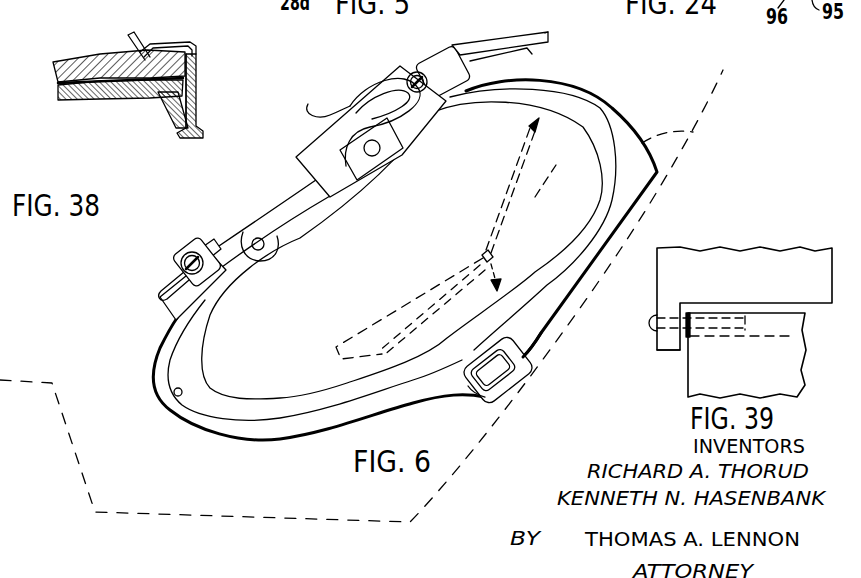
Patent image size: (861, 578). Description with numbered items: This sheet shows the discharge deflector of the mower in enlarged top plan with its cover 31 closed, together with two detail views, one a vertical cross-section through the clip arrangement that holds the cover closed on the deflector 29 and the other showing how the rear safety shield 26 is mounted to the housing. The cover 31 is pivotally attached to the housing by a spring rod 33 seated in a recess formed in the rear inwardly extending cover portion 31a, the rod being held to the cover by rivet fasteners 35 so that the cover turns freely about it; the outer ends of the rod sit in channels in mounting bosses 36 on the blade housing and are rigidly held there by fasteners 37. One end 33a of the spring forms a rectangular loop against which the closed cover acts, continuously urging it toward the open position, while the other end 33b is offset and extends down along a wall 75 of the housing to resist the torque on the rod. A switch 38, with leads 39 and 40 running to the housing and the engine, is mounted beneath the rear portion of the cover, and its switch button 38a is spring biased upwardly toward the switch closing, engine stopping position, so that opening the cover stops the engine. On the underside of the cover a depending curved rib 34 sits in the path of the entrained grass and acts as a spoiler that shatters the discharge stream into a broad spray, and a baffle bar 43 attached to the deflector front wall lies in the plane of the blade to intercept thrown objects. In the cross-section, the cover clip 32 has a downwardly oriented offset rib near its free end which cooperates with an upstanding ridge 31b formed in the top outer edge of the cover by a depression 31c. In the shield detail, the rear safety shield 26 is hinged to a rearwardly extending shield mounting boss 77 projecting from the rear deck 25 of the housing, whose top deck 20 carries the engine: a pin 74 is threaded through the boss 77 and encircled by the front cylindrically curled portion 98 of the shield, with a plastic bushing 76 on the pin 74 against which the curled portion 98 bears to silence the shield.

In FIG. 6, the top deck 20 is at (147, 390).
In FIG. 39, the rearwardly extending projection 25 is at (763, 289).
In FIG. 39, the rear safety shield 26 is at (704, 380).
In FIG. 38, the deflector 29 is at (131, 99).
In FIG. 6, the deflector 29 is at (278, 497).
In FIG. 38, the cover 31 is at (90, 53).
In FIG. 6, the cover 31 is at (420, 254).
In FIG. 6, the rear inwardly extending cover portion 31a is at (308, 203).
In FIG. 38, the upstanding ridge or rib 31b is at (196, 40).
In FIG. 6, the upstanding ridge or rib 31b is at (545, 352).
In FIG. 38, the depression 31c is at (130, 42).
In FIG. 6, the depression 31c is at (465, 389).
In FIG. 38, the cover clip 32 is at (160, 43).
In FIG. 6, the cover clip 32 is at (523, 388).
In FIG. 6, the spring rod 33 is at (208, 247).
In FIG. 6, the rectangular loop end of spring 33a is at (176, 300).
In FIG. 6, the offset end of spring 33b is at (521, 56).
In FIG. 6, the depending curved rib 34 is at (495, 184).
In FIG. 6, the rivet fasteners 35 is at (256, 236).
In FIG. 6, the mounting bosses 36 is at (184, 250).
In FIG. 6, the fasteners 37 is at (164, 294).
In FIG. 6, the switch 38 is at (391, 151).
In FIG. 6, the switch button 38a is at (373, 158).
In FIG. 6, the lead 39 is at (330, 107).
In FIG. 6, the lead 40 is at (371, 96).
In FIG. 6, the baffle bar 43 is at (385, 312).
In FIG. 39, the pin 74 is at (650, 323).
In FIG. 6, the wall 75 is at (530, 31).
In FIG. 39, the plastic bushings 76 is at (688, 337).
In FIG. 39, the shield mounting bosses 77 is at (657, 352).
In FIG. 39, the front cylindrically curled portion 98 is at (767, 338).